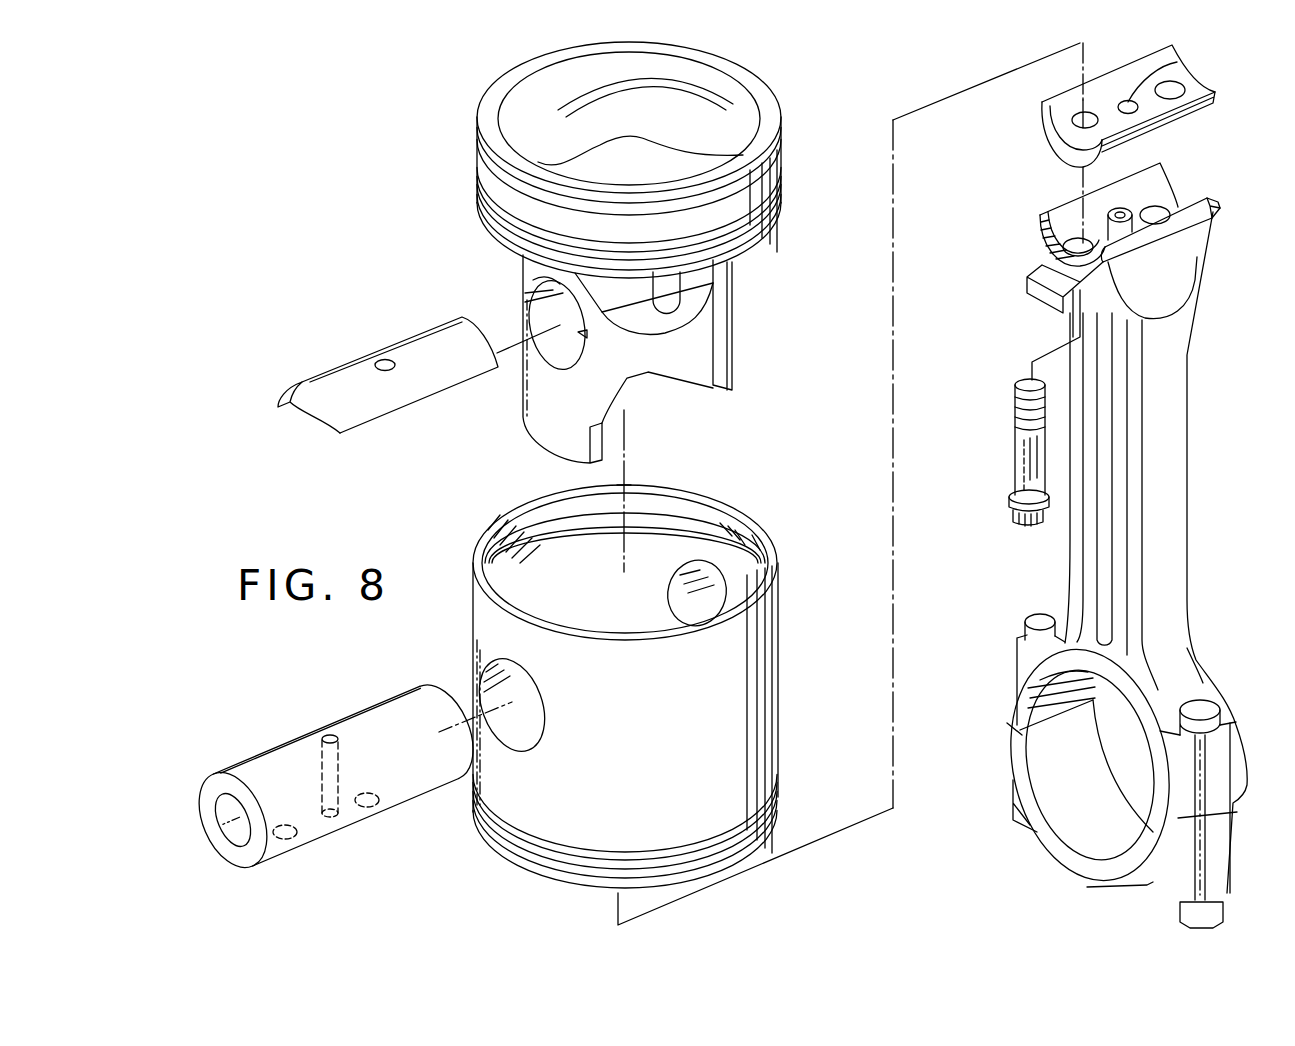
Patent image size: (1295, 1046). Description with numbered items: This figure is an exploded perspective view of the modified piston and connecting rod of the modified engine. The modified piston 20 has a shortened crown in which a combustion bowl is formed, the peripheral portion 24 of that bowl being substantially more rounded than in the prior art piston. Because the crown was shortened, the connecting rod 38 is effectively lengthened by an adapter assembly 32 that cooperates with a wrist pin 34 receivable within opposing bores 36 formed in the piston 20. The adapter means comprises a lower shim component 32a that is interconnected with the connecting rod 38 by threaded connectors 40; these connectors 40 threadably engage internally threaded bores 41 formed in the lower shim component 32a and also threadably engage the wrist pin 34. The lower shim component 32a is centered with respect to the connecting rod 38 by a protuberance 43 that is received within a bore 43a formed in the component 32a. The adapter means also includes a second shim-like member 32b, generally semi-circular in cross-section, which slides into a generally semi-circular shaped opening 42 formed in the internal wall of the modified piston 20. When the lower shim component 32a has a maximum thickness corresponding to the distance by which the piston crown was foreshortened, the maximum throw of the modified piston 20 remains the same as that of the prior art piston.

The modified piston 20 is at (478, 185).
The peripheral portion of the combustion bowl 24 is at (552, 132).
The adapter assembly 32 is at (1052, 157).
The lower shim component 32a is at (1195, 123).
The shim-like member 32b is at (355, 362).
The wrist pin 34 is at (268, 762).
The opposing bores 36 is at (695, 607).
The connecting rod 38 is at (1167, 548).
The threaded connectors 40 is at (1022, 461).
The internally threaded bores 41 is at (1075, 120).
The semi-circular opening 42 is at (533, 284).
The protuberance 43 is at (1160, 188).
The bore 43a is at (1177, 62).